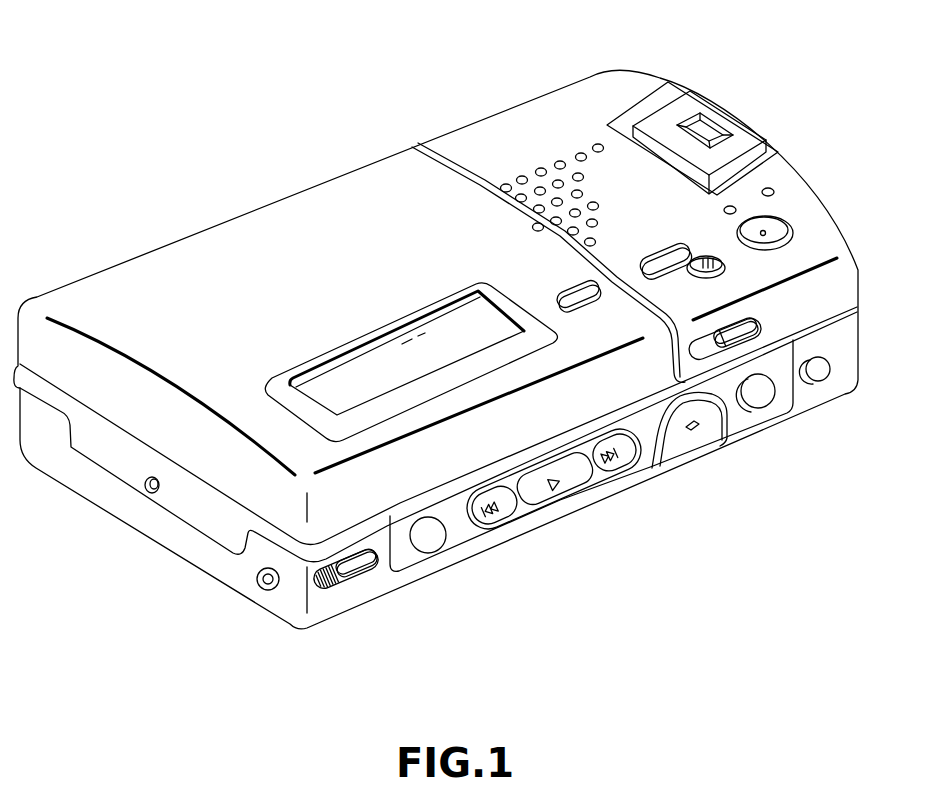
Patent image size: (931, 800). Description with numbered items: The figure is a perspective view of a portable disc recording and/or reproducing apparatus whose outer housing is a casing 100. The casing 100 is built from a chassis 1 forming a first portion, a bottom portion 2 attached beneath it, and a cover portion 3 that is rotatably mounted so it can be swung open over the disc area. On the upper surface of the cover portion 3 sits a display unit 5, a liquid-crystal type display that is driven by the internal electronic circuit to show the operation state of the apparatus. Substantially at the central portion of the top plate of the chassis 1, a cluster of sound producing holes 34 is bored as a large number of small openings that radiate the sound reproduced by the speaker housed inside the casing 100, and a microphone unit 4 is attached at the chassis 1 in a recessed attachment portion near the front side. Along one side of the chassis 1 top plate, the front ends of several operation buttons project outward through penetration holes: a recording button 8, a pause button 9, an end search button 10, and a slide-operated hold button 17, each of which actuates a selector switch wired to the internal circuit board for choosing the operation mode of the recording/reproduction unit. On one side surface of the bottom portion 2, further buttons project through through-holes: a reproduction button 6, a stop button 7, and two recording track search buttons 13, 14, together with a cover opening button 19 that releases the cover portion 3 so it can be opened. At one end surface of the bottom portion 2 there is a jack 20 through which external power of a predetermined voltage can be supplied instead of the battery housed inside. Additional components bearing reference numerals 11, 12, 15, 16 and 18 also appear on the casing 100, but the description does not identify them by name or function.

The casing 100 is at (287, 166).
The chassis 1 is at (548, 113).
The bottom portion 2 is at (372, 581).
The cover portion 3 is at (185, 258).
The microphone unit 4 is at (724, 117).
The display unit 5 is at (390, 360).
The reproduction button 6 is at (578, 482).
The stop button 7 is at (697, 438).
The recording button 8 is at (778, 230).
The pause button 9 is at (725, 266).
The end search button 10 is at (658, 256).
The key 11 is at (568, 294).
The hole 12 is at (430, 542).
The recording track search button 13 is at (497, 517).
The recording track search button 14 is at (620, 464).
The button 15 is at (760, 394).
The jack 16 is at (822, 373).
The hold button 17 is at (737, 207).
The microphone hole 18 is at (772, 188).
The cover opening button 19 is at (330, 580).
The jack 20 is at (258, 588).
The sound producing holes 34 is at (535, 167).